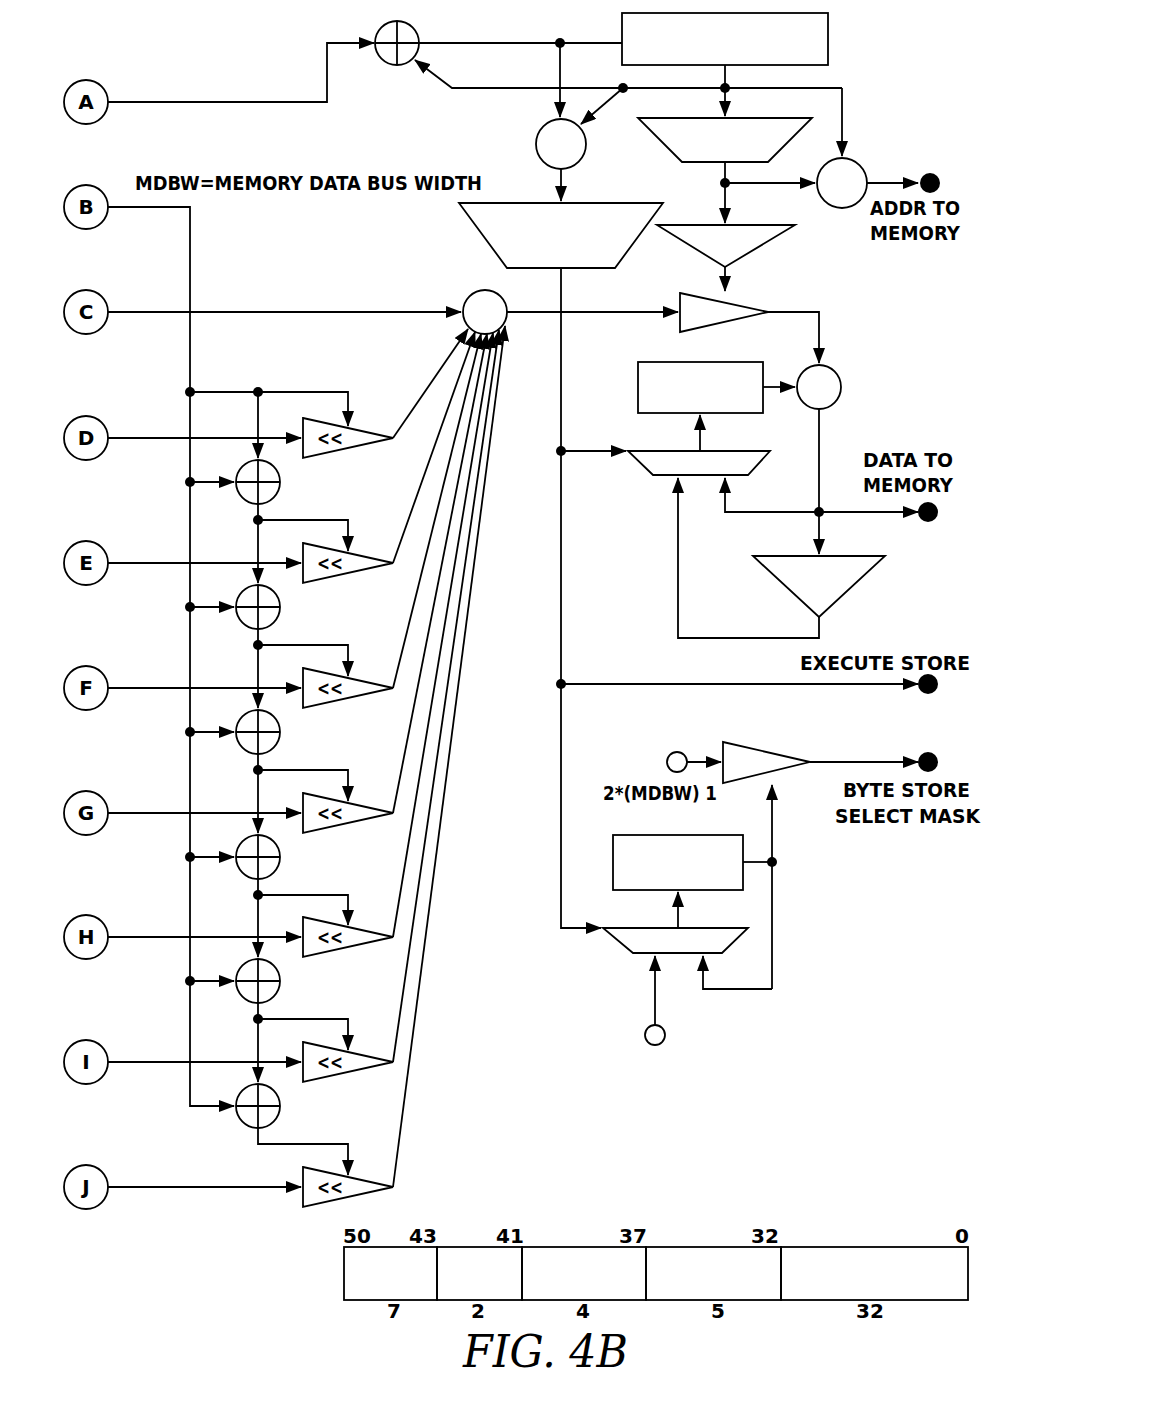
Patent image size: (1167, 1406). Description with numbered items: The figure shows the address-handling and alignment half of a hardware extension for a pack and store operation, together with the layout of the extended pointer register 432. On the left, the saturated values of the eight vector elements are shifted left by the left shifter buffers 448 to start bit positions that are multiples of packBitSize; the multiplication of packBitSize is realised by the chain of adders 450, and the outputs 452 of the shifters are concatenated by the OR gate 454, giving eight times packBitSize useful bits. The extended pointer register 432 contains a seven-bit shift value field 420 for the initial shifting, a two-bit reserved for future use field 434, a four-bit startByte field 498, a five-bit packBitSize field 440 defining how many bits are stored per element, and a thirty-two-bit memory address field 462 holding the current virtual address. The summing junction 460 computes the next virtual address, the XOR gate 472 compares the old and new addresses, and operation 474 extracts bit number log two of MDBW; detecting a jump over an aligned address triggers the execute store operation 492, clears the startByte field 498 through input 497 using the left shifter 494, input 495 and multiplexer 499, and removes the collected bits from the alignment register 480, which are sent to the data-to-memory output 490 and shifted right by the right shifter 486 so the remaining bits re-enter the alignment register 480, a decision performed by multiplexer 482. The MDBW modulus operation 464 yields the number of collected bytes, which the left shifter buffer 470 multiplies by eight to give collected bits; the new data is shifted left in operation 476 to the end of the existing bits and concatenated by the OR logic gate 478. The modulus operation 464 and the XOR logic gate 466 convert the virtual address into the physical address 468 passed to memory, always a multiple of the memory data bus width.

The shift value field 420 is at (392, 1243).
The extended pointer register 432 is at (240, 1254).
The reserved for future use field 434 is at (478, 1243).
The packBitSize field 440 is at (717, 1243).
The left shifter buffers 448 is at (380, 428).
The adders 450 is at (281, 486).
The outputs 452 is at (446, 362).
The OR gate 454 is at (479, 292).
The summing junction 460 is at (383, 32).
The memory address field 462 is at (829, 38).
The MDBW modulus operation 464 is at (769, 118).
The XOR logic gate 466 is at (842, 208).
The physical address 468 is at (929, 172).
The left shifter buffer 470 is at (760, 246).
The XOR gate 472 is at (544, 127).
The log2(MDBW) bit extraction operation 474 is at (630, 203).
The left shift operation 476 is at (728, 326).
The OR logic gate 478 is at (841, 387).
The alignment register 480 is at (643, 362).
The multiplexer 482 is at (637, 460).
The right shifter 486 is at (852, 582).
The data-to-memory output 490 is at (936, 520).
The execute store operation 492 is at (937, 692).
The left shifter 494 is at (768, 752).
The input 495 is at (737, 990).
The input 497 is at (645, 1037).
The startByte field 498 is at (707, 835).
The multiplexer 499 is at (620, 942).